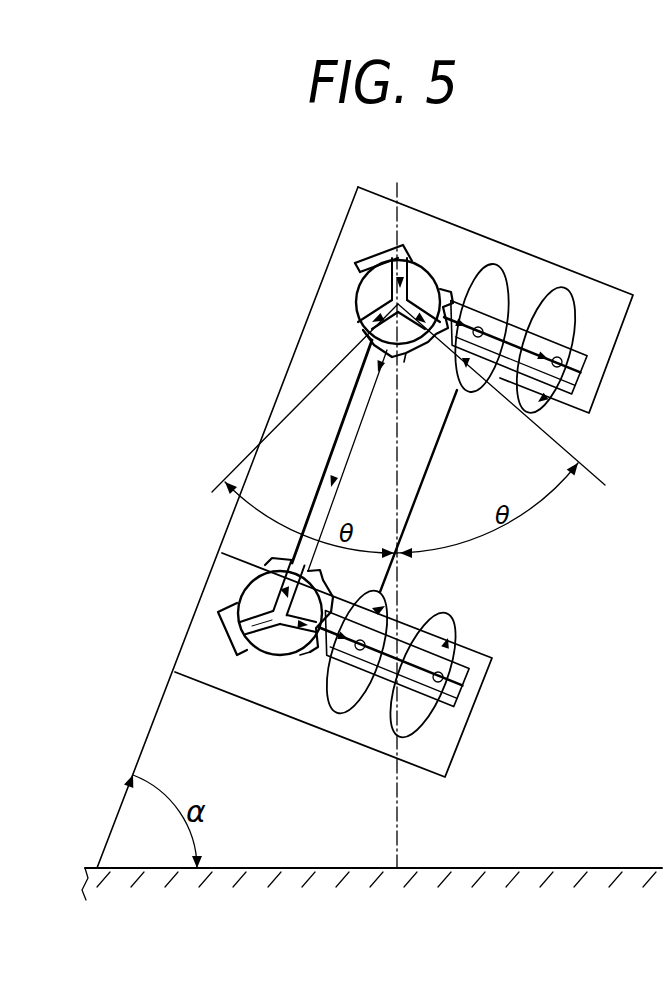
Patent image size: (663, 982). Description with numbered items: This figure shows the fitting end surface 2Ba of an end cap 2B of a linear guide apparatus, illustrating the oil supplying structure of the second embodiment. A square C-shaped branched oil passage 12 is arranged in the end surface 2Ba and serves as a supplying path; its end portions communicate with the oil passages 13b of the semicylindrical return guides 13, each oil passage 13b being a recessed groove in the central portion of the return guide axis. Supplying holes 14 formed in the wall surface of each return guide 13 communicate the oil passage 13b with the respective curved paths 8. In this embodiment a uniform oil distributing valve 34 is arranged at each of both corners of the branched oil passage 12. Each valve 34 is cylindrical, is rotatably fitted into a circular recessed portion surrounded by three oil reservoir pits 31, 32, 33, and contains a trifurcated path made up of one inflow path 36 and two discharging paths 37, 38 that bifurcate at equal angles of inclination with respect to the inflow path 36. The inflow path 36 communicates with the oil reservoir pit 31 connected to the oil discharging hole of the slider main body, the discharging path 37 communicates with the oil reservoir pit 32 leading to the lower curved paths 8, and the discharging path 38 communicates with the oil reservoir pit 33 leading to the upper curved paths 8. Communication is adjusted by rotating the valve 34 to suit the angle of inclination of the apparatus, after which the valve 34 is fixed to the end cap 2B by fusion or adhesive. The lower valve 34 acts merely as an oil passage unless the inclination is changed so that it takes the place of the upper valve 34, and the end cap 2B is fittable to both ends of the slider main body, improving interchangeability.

The end cap 2B is at (190, 612).
The end surface 2Ba is at (303, 370).
The curved paths 8 is at (518, 392).
The branched oil passage 12 is at (343, 433).
The return guide 13 is at (573, 368).
The oil passage 13b is at (458, 322).
The supplying holes 14 is at (543, 342).
The oil reservoir pit 31 is at (405, 245).
The oil reservoir pit 32 is at (357, 333).
The oil reservoir pit 33 is at (440, 290).
The uniform oil distributing valve 34 is at (367, 290).
The inflow path 36 is at (418, 282).
The discharging path 37 is at (357, 302).
The discharging path 38 is at (363, 345).